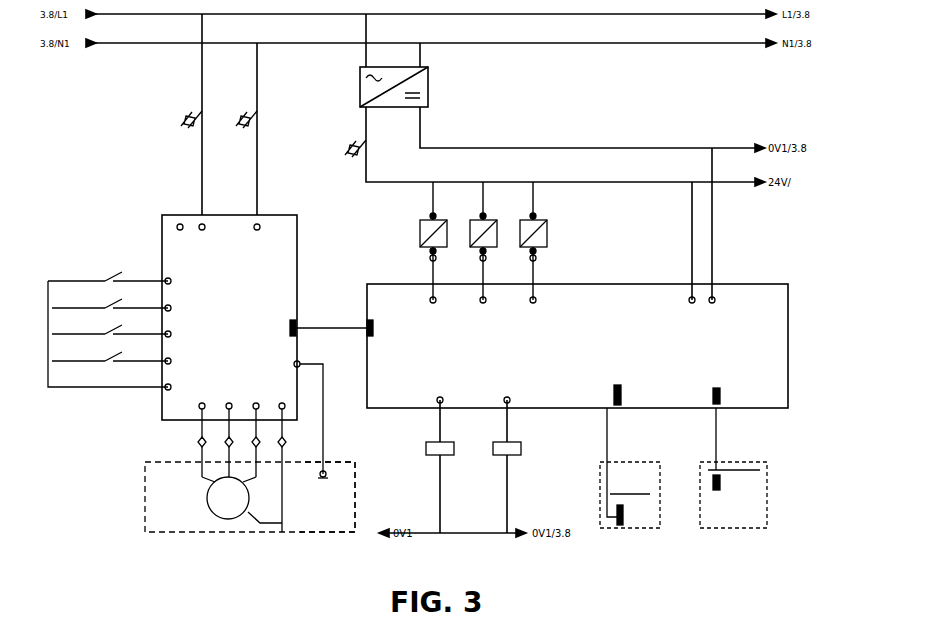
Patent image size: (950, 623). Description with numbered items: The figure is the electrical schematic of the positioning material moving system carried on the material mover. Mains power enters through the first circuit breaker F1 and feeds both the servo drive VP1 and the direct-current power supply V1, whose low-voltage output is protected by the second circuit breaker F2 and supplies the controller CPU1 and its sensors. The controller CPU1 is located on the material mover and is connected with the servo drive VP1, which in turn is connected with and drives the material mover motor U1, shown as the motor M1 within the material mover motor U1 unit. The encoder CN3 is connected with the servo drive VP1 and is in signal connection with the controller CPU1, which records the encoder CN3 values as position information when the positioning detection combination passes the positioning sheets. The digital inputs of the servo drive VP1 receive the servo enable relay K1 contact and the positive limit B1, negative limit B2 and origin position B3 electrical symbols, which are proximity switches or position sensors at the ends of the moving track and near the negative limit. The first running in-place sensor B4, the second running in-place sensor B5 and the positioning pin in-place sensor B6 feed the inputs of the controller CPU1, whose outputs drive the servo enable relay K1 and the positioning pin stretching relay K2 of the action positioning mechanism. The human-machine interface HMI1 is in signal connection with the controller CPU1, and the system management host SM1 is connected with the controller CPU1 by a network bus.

The first circuit breaker F1 is at (212, 114).
The second circuit breaker F2 is at (346, 150).
The direct-current power supply V1 is at (388, 72).
The motor driver VP1 is at (264, 344).
The servo enable relay K1 is at (251, 401).
The positive limit electrical symbol B1 is at (110, 302).
The negative limit electrical symbol B2 is at (110, 328).
The origin position electrical symbol B3 is at (110, 355).
The controller CPU1 is at (559, 346).
The first running in-place sensor electrical symbol B4 is at (424, 241).
The second running in-place sensor electrical symbol B5 is at (474, 241).
The positioning pin in-place sensor B6 is at (524, 241).
The positioning pin stretching relay K2 is at (496, 466).
The material mover motor U1 is at (238, 470).
The three-phase motor M1 is at (225, 498).
The encoder CN3 is at (327, 497).
The human-machine interface HMI1 is at (612, 468).
The system management host SM1 is at (720, 468).